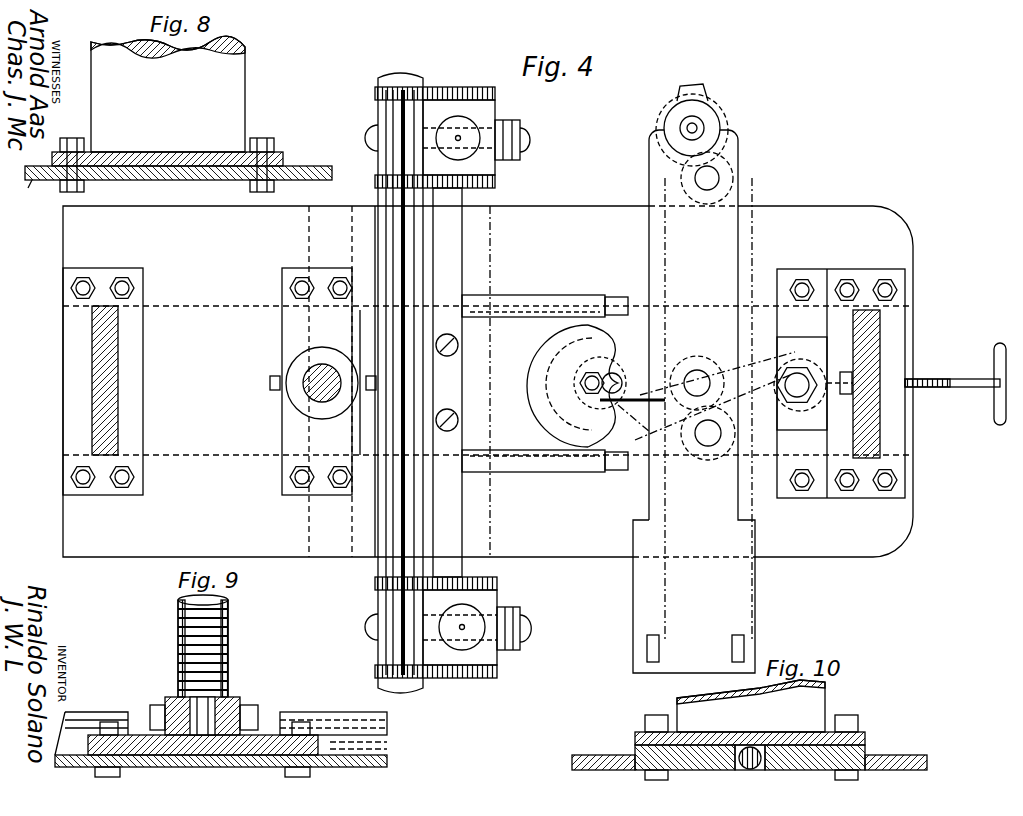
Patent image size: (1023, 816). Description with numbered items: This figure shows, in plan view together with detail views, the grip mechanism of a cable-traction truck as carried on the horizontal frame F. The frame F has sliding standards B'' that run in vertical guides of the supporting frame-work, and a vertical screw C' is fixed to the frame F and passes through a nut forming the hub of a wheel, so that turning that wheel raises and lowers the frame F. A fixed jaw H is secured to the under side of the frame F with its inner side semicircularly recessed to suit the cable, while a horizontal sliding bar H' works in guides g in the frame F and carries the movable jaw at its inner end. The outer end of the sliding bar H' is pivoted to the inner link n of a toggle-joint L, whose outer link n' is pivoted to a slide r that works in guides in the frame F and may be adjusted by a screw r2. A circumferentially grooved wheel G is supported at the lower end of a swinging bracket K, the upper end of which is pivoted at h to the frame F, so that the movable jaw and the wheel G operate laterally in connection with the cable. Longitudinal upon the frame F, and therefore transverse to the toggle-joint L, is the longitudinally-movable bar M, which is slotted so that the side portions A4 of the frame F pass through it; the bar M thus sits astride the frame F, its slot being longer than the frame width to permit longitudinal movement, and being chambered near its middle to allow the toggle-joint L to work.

In FIG. 8, the side portions of the frame A4 is at (171, 170).
In FIG. 4, the side portions of the frame A4 is at (488, 381).
In FIG. 9, the side portions of the frame A4 is at (214, 751).
In FIG. 10, the side portions of the frame A4 is at (749, 747).
In FIG. 8, the sliding standards B'' is at (168, 94).
In FIG. 4, the sliding standards B'' is at (498, 382).
In FIG. 10, the sliding standards B'' is at (751, 706).
In FIG. 4, the vertical screw C' is at (311, 383).
In FIG. 9, the vertical screw C' is at (204, 665).
In FIG. 4, the horizontal frame F is at (594, 190).
In FIG. 4, the grooved wheel G is at (394, 382).
In FIG. 4, the fixed jaw H is at (447, 382).
In FIG. 4, the horizontal sliding bar H' is at (533, 383).
In FIG. 4, the swinging bracket K is at (453, 384).
In FIG. 4, the toggle-joint L is at (697, 406).
In FIG. 4, the longitudinally-movable bar M is at (694, 401).
In FIG. 4, the guides g is at (616, 388).
In FIG. 4, the pivot h is at (695, 648).
In FIG. 4, the inner link n is at (582, 386).
In FIG. 4, the outer link n' is at (786, 383).
In FIG. 4, the slide r is at (828, 401).
In FIG. 10, the slide r is at (724, 770).
In FIG. 4, the adjusting screw r2 is at (955, 384).
In FIG. 10, the adjusting screw r2 is at (758, 768).